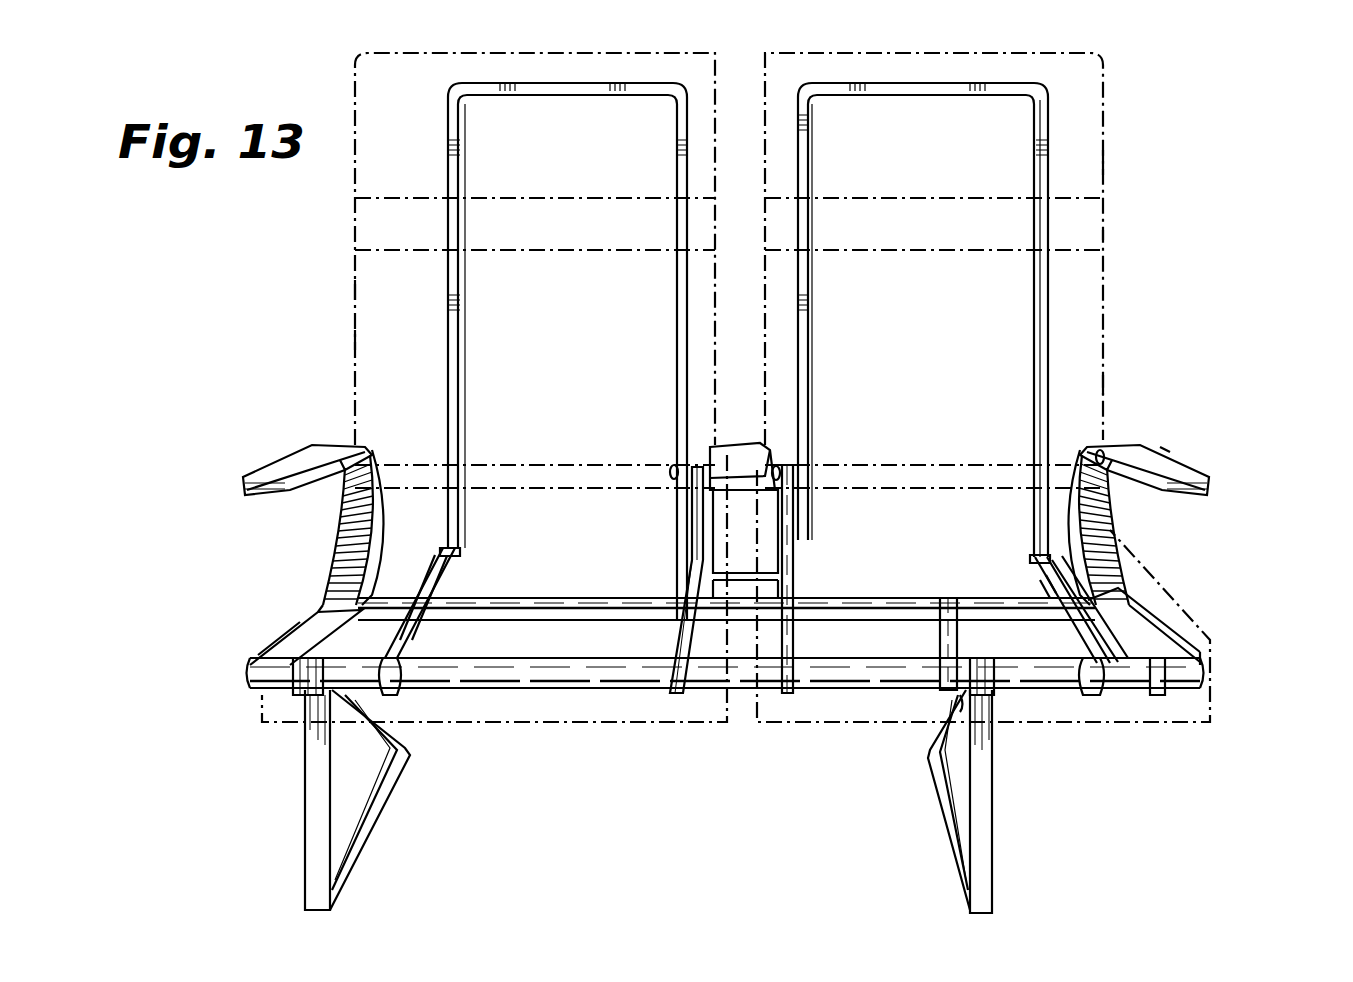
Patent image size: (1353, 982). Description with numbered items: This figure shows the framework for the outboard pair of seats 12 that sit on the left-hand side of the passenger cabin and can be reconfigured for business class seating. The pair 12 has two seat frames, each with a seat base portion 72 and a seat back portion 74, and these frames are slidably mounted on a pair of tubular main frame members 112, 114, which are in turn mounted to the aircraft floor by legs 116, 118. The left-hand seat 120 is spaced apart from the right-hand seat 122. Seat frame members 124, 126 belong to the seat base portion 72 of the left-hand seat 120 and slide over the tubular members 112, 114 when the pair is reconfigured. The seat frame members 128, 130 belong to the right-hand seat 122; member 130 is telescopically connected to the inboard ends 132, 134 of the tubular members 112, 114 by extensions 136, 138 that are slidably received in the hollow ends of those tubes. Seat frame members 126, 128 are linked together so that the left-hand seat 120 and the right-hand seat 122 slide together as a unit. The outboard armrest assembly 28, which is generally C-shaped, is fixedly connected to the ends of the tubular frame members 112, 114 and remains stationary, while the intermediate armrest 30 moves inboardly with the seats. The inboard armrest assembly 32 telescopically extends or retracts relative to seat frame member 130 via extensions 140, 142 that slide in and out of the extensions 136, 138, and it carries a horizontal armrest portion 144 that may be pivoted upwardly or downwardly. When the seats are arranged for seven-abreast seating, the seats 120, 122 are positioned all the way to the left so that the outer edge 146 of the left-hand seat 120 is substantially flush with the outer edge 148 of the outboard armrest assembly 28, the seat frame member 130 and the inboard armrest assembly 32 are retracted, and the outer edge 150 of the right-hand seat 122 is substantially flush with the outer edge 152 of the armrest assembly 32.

The outboard pair of seats 12 is at (1140, 237).
The outboard armrest assembly 28 is at (267, 555).
The intermediate armrest 30 is at (715, 616).
The inboard armrest assembly 32 is at (1194, 555).
The seat base portion 72 is at (445, 636).
The seat back portion 74 is at (1048, 343).
The tubular main frame member 112 is at (555, 605).
The tubular main frame member 114 is at (540, 722).
The leg 116 is at (318, 775).
The leg 118 is at (990, 800).
The left-hand seat 120 is at (385, 290).
The right-hand seat 122 is at (1085, 165).
The seat frame member 124 is at (360, 630).
The seat frame member 126 is at (718, 640).
The seat frame member 128 is at (790, 695).
The seat frame member 130 is at (1090, 640).
The inboard end 132 is at (1040, 590).
The inboard end 134 is at (985, 700).
The extension 136 is at (1035, 570).
The extension 138 is at (1112, 698).
The extension 140 is at (1095, 578).
The extension 142 is at (1125, 648).
The horizontal armrest portion 144 is at (1170, 446).
The outer edge 146 is at (350, 335).
The outer edge 148 is at (243, 484).
The outer edge 150 is at (1105, 385).
The outer edge 152 is at (1115, 503).